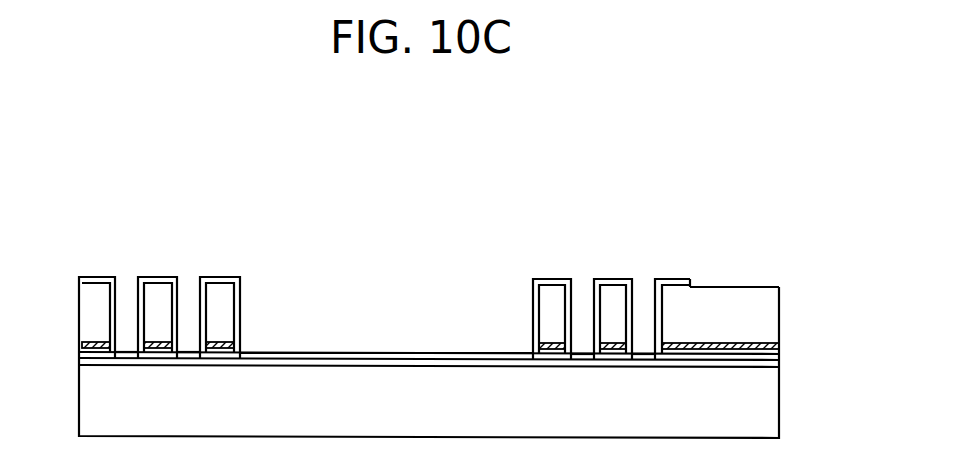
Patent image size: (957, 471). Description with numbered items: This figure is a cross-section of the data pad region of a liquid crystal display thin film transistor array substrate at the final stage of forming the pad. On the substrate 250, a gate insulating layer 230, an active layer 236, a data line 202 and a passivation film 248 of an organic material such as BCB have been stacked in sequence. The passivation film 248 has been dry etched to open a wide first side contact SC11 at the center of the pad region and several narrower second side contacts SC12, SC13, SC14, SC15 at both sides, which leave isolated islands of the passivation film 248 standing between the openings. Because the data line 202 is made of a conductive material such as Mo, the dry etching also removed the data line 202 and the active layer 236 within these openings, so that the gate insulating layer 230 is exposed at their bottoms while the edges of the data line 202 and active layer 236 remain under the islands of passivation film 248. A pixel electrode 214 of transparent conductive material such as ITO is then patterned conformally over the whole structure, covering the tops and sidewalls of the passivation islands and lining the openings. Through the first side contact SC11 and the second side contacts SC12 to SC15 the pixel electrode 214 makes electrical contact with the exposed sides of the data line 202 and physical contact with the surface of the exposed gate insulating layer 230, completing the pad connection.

The pixel electrode 214 is at (92, 277).
The passivation film 248 is at (765, 312).
The data line 202 is at (760, 346).
The active layer 236 is at (765, 359).
The gate insulating layer 230 is at (765, 366).
The substrate 250 is at (765, 415).
The first side contact SC11 is at (393, 275).
The second side contact SC12 is at (126, 278).
The second side contact SC13 is at (189, 278).
The second side contact SC14 is at (580, 279).
The second side contact SC15 is at (644, 279).